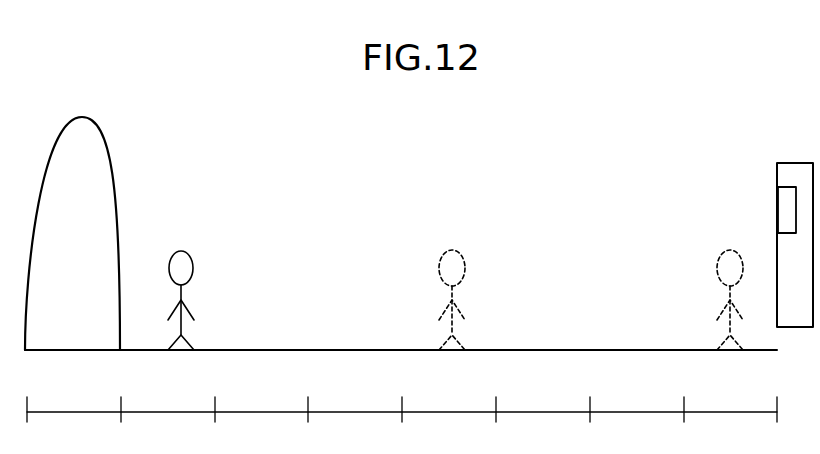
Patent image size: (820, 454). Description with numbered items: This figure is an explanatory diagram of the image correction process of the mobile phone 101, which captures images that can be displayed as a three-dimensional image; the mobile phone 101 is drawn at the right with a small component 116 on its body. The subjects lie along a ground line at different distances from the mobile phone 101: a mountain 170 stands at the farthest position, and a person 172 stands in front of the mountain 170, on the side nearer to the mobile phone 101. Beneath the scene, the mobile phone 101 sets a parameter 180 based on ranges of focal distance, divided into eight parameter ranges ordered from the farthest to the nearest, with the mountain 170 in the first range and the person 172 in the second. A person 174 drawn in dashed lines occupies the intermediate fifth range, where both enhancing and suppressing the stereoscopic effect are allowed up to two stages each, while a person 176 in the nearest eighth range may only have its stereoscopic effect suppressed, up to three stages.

The mobile phone 101 is at (787, 163).
The lens unit 116 is at (780, 202).
The mountain 170 is at (107, 143).
The person 172 is at (181, 251).
The person 174 is at (452, 250).
The person 176 is at (730, 250).
The parameter 180 is at (752, 410).